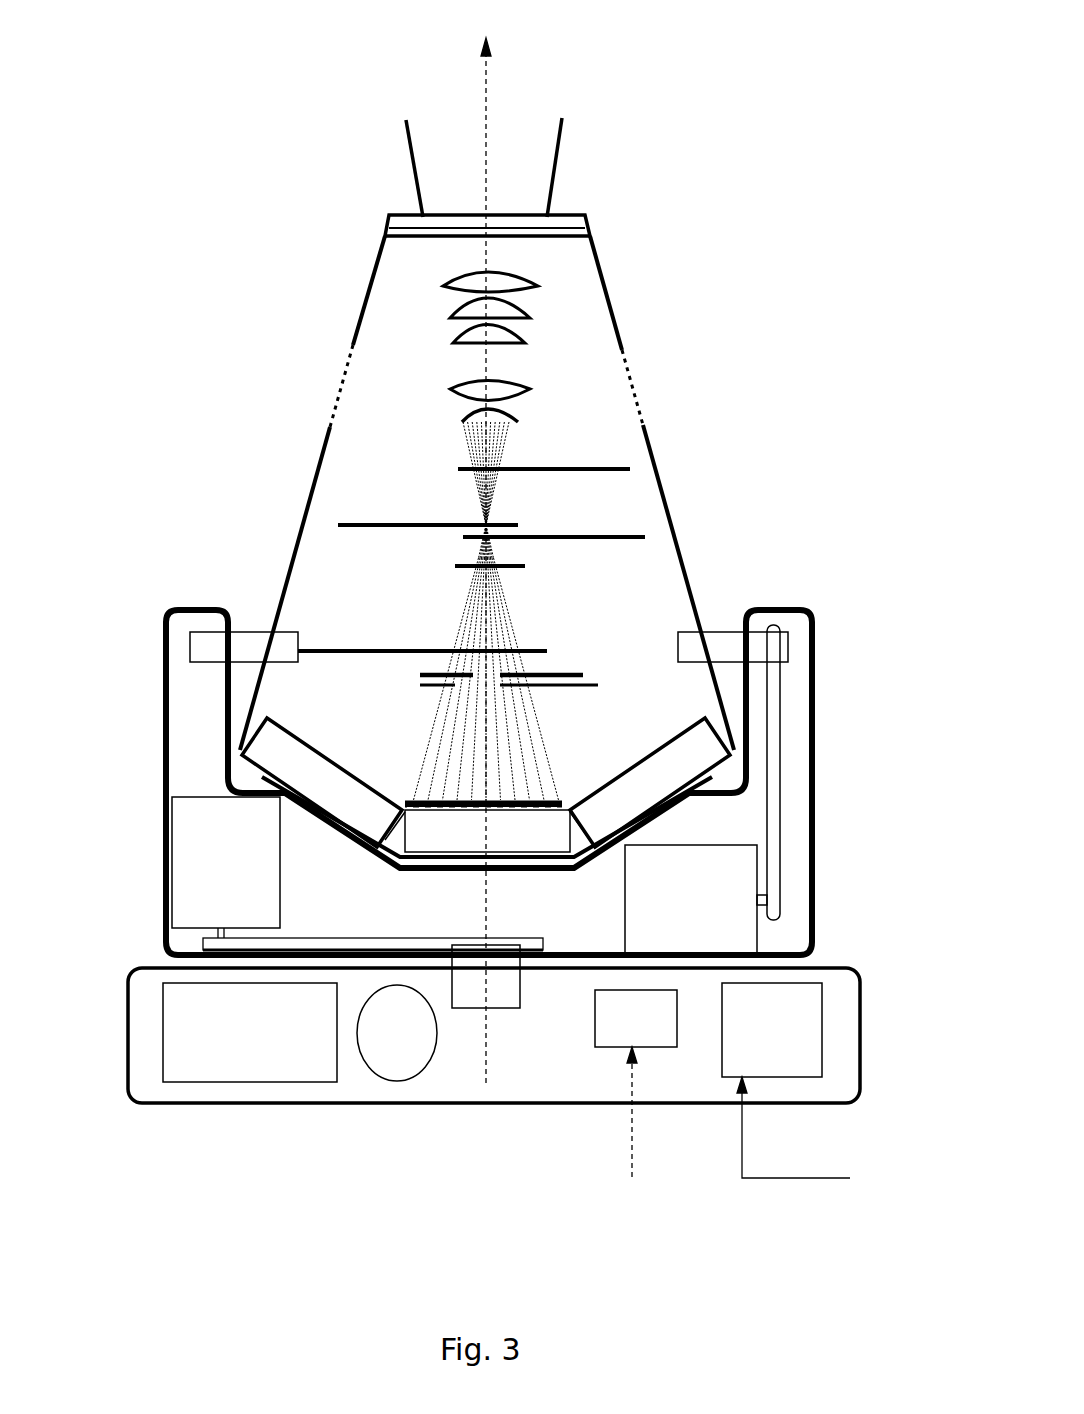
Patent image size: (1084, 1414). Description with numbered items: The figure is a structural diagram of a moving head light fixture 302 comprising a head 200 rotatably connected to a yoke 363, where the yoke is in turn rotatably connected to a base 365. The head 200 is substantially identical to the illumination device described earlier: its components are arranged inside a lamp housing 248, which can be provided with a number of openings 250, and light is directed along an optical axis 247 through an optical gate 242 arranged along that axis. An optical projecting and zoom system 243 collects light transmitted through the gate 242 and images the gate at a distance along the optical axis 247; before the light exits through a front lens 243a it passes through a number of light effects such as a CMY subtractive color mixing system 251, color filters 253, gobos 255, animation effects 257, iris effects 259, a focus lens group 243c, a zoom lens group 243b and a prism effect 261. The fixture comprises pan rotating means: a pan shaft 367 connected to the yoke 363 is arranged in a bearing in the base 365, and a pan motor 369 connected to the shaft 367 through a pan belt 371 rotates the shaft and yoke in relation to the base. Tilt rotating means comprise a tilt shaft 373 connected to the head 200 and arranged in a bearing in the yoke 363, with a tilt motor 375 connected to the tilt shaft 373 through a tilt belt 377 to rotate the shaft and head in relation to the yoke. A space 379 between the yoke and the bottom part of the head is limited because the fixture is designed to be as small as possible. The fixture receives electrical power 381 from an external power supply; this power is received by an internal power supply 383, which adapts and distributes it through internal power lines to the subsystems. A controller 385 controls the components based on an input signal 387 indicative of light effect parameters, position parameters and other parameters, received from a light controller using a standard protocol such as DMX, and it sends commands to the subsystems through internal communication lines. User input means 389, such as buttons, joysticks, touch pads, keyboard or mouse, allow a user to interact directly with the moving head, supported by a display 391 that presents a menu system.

The moving head light fixture 302 is at (252, 105).
The optical axis 247 is at (488, 80).
The head 200 is at (608, 297).
The openings 250 is at (340, 384).
The lamp housing 248 is at (657, 470).
The optical projecting and zoom system 243 is at (373, 210).
The front lens 243a is at (440, 224).
The zoom lens group 243b is at (443, 284).
The focus lens group 243c is at (450, 388).
The optical gate 242 is at (565, 508).
The prism effect 261 is at (544, 484).
The gobos 255 is at (428, 510).
The animation effects 257 is at (554, 552).
The iris effects 259 is at (470, 572).
The color filters 253 is at (422, 635).
The CMY subtractive color mixing system 251 is at (486, 680).
The yoke 363 is at (163, 678).
The tilt shaft 373 is at (489, 647).
The space 379 is at (446, 862).
The pan motor 369 is at (226, 862).
The tilt motor 375 is at (691, 899).
The tilt belt 377 is at (780, 760).
The pan belt 371 is at (350, 945).
The pan shaft 367 is at (486, 976).
The base 365 is at (300, 1105).
The display 391 is at (250, 1032).
The user input means 389 is at (397, 1033).
The internal power supply 383 is at (636, 1018).
The controller 385 is at (772, 1030).
The electrical power 381 is at (608, 1112).
The input signal 387 is at (793, 1127).